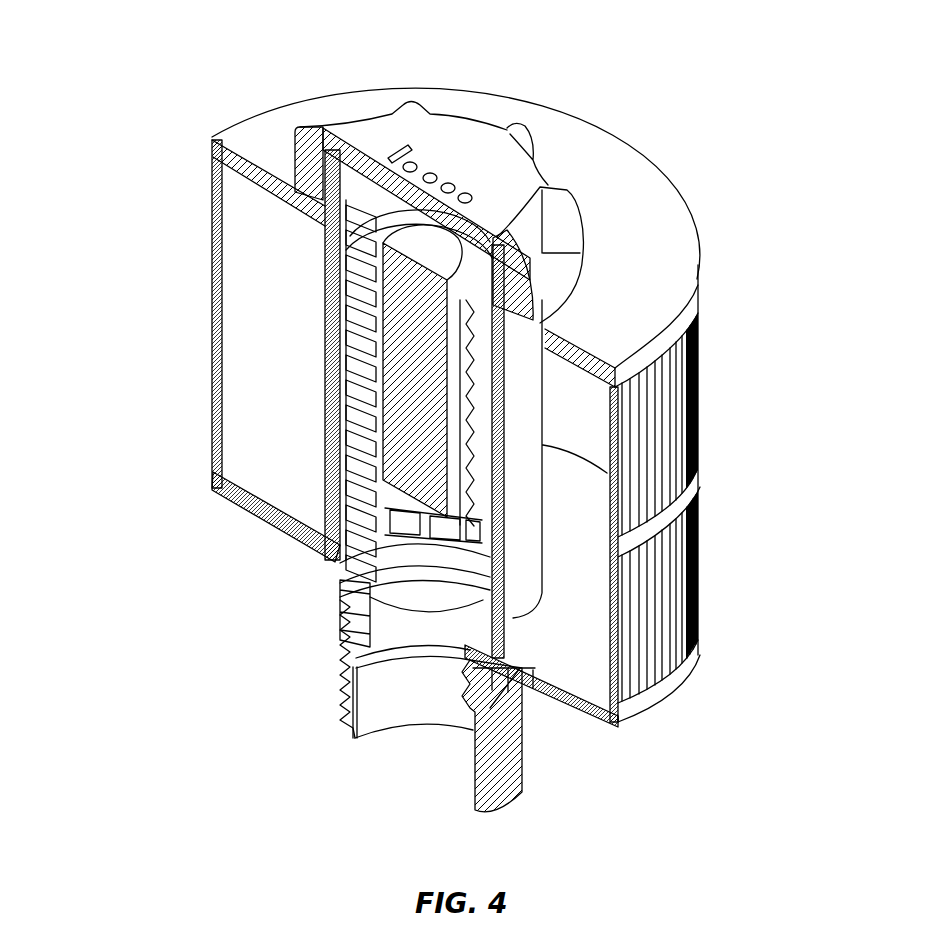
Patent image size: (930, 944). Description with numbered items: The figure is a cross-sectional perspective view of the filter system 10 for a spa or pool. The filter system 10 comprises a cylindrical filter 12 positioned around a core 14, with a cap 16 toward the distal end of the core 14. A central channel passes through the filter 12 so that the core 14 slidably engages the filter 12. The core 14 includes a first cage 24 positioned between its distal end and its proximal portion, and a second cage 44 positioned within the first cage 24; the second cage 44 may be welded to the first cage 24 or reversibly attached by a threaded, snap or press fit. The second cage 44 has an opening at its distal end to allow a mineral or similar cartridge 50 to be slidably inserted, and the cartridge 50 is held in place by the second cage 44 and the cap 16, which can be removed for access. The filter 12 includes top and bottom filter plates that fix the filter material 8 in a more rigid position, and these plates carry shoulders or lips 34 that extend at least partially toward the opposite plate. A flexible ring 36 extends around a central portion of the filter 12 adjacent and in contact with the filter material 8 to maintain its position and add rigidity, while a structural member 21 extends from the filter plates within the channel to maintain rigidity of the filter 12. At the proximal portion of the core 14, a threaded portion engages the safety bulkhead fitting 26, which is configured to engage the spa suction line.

The filter system 10 is at (418, 432).
The filter 12 is at (670, 268).
The cap 16 is at (446, 143).
The cartridge 50 is at (393, 320).
The first cage 24 is at (330, 408).
The structural member 21 is at (340, 500).
The core 14 is at (335, 563).
The second cage 44 is at (487, 534).
The filter material 8 is at (677, 395).
The lips 34 is at (700, 348).
The ring 36 is at (690, 487).
The fitting 26 is at (520, 780).